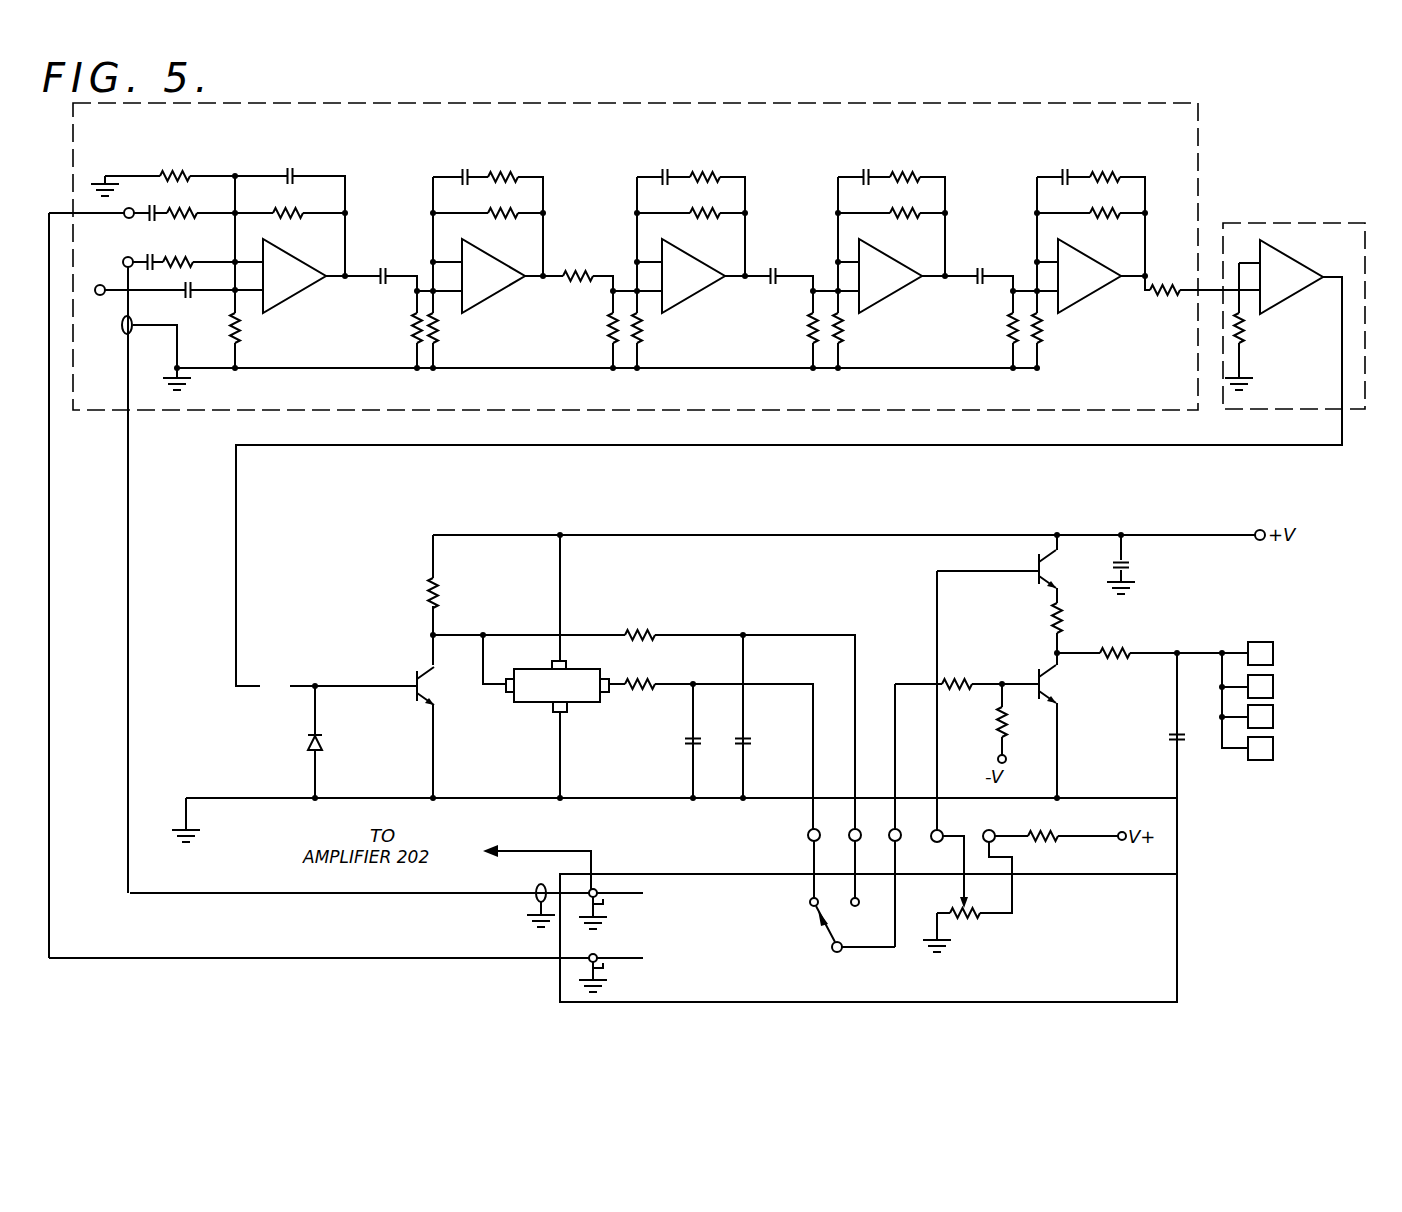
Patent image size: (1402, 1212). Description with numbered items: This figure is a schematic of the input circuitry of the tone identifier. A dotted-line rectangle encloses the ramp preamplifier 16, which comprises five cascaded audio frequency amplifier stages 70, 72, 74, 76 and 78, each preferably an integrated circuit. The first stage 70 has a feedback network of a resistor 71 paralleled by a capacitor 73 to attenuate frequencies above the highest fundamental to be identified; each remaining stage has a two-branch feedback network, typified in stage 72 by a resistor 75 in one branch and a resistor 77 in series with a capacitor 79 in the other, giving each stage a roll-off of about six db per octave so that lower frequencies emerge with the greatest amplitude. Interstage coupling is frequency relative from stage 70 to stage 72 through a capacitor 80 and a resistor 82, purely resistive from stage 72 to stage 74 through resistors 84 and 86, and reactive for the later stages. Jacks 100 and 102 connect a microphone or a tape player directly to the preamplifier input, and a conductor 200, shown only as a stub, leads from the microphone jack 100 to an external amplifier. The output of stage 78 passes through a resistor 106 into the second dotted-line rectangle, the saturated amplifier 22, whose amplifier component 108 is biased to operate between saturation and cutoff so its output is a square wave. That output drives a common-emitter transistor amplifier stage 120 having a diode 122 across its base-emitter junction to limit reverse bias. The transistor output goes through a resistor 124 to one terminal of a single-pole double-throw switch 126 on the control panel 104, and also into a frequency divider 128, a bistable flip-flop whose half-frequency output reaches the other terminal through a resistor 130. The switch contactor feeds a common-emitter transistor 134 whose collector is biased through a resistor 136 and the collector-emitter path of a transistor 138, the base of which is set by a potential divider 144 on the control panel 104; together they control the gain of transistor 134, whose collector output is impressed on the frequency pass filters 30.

The ramp preamplifier 16 is at (758, 103).
The saturated amplifier 22 is at (1285, 222).
The first stage 70 is at (297, 303).
The resistor 71 is at (293, 216).
The stage 72 is at (496, 303).
The capacitor 73 is at (290, 170).
The stage 74 is at (696, 303).
The resistor 75 is at (493, 216).
The stage 76 is at (893, 303).
The resistor 77 is at (508, 172).
The stage 78 is at (1088, 303).
The capacitor 79 is at (463, 170).
The capacitor 80 is at (385, 272).
The resistor 82 is at (415, 330).
The resistor 84 is at (580, 272).
The resistor 86 is at (612, 330).
The microphone jack 100 is at (636, 899).
The jack 102 is at (636, 964).
The control panel 104 is at (703, 1002).
The resistor 106 is at (1170, 300).
The amplifier component 108 is at (1278, 305).
The transistor amplifier stage 120 is at (410, 672).
The diode 122 is at (308, 742).
The resistor 124 is at (650, 634).
The single-pole double-throw switch 126 is at (824, 941).
The frequency divider 128 is at (585, 703).
The resistor 130 is at (655, 683).
The transistor 134 is at (1043, 676).
The resistor 136 is at (1065, 624).
The transistor 138 is at (1037, 563).
The potential divider 144 is at (990, 918).
The conductor 200 is at (557, 851).
The frequency pass filters 30 is at (1275, 686).